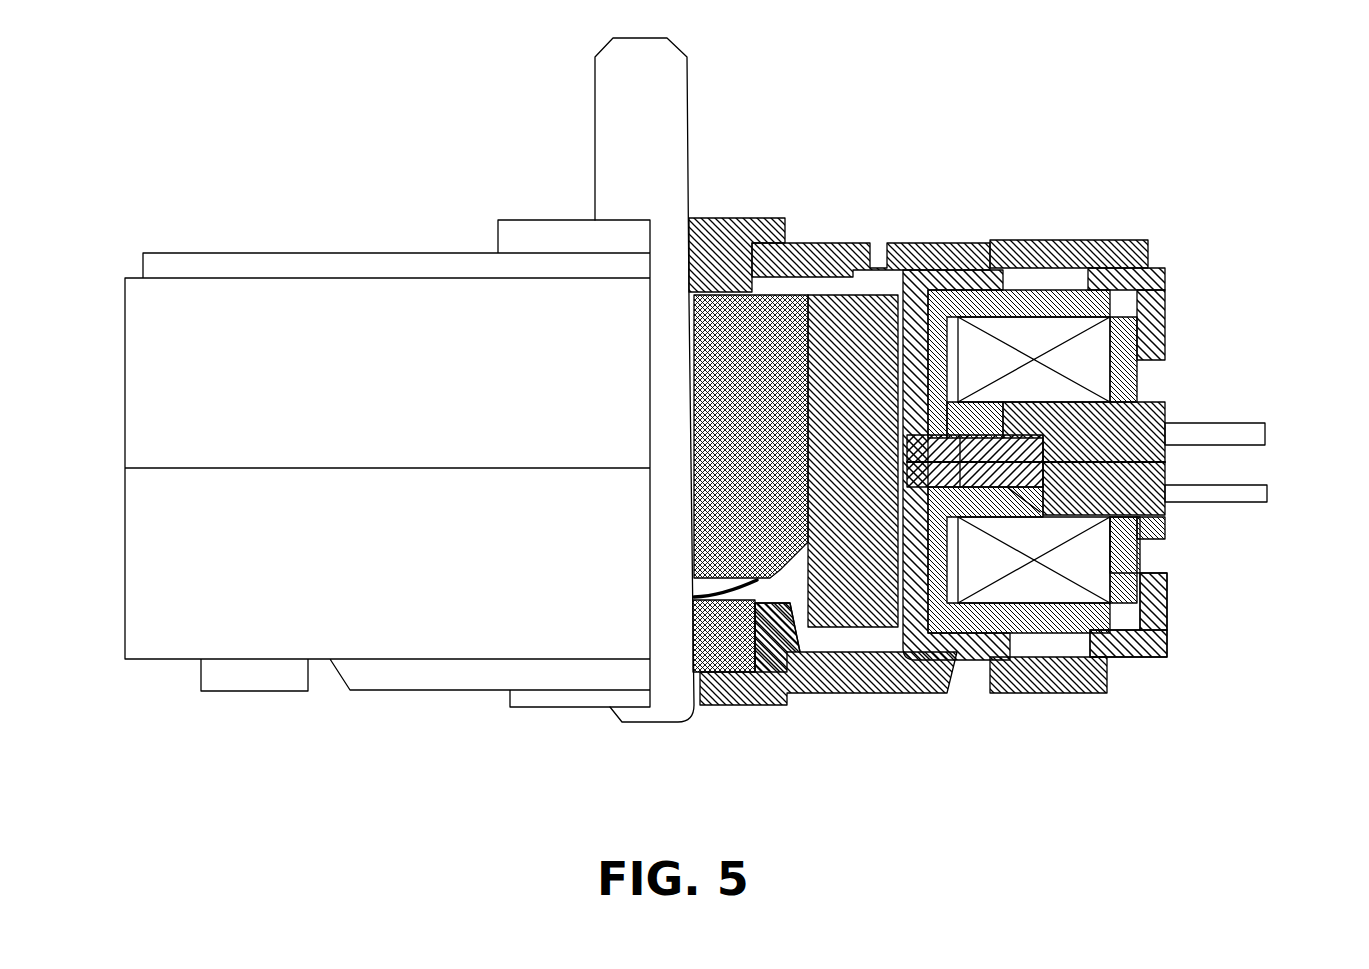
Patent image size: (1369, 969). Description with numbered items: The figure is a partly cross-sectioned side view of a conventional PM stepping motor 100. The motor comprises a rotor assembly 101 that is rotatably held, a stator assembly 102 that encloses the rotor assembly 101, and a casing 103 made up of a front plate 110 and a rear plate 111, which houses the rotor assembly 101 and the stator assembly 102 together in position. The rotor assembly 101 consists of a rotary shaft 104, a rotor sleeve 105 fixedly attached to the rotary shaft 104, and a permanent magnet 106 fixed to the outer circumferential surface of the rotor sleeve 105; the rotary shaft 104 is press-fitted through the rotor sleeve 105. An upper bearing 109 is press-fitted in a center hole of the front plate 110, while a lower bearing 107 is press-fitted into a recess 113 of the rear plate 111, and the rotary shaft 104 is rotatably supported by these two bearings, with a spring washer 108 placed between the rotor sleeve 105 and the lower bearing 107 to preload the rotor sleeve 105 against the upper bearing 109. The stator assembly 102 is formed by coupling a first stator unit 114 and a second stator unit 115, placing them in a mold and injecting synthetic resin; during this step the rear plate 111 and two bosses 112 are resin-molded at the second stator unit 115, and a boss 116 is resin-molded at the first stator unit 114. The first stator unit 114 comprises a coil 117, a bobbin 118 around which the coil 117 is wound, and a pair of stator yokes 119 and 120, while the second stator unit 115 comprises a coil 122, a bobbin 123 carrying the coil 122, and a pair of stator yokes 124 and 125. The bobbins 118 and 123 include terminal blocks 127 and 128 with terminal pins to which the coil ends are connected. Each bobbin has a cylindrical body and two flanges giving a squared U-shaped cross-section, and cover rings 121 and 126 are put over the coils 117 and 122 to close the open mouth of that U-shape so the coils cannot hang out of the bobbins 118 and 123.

The PM stepping motor 100 is at (1047, 105).
The rotor assembly 101 is at (828, 20).
The stator assembly 102 is at (445, 150).
The casing 103 is at (232, 190).
The rotary shaft 104 is at (690, 92).
The rotor sleeve 105 is at (758, 327).
The permanent magnet 106 is at (862, 328).
The lower bearing 107 is at (722, 652).
The leaf spring 108 is at (735, 605).
The upper bearing 109 is at (708, 215).
The front plate 110 is at (930, 243).
The rear plate 111 is at (877, 697).
The bosses 112 is at (1017, 695).
The recess 113 is at (767, 630).
The first stator unit 114 is at (1268, 210).
The second stator unit 115 is at (1288, 665).
The bosses 116 is at (1020, 242).
The coil 117 is at (1097, 360).
The bobbin 118 is at (1170, 397).
The stator yoke 119 is at (1155, 270).
The stator yoke 120 is at (1133, 310).
The cover ring 121 is at (1137, 375).
The coil 122 is at (1167, 603).
The bobbin 123 is at (1178, 517).
The stator yoke 124 is at (1138, 660).
The stator yoke 125 is at (1168, 623).
The cover ring 126 is at (1145, 572).
The terminal block 127 is at (1165, 420).
The terminal block 128 is at (1140, 547).